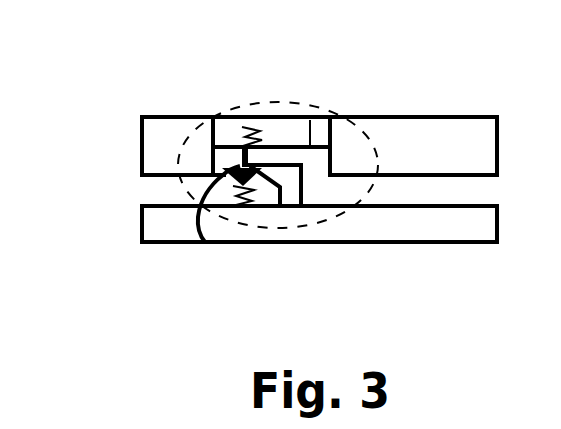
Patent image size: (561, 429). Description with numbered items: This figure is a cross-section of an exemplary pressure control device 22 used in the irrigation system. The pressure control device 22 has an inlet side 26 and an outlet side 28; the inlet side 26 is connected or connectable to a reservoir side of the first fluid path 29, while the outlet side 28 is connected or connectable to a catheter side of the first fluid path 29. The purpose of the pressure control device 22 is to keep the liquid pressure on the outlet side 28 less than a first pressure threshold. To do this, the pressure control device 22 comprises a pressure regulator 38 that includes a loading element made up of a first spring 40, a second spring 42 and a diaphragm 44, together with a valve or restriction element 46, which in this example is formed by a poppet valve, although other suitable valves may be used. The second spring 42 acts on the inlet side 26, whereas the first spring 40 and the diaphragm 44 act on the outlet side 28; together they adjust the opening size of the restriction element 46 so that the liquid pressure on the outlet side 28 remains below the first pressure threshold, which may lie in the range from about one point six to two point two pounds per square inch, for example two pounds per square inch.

The pressure control device 22 is at (144, 104).
The inlet side 26 is at (142, 193).
The outlet side 28 is at (497, 187).
The first fluid path 29 is at (160, 186).
The pressure regulator 38 is at (322, 217).
The first spring 40 is at (270, 118).
The second spring 42 is at (232, 208).
The diaphragm 44 is at (310, 118).
The restriction element 46 is at (193, 235).